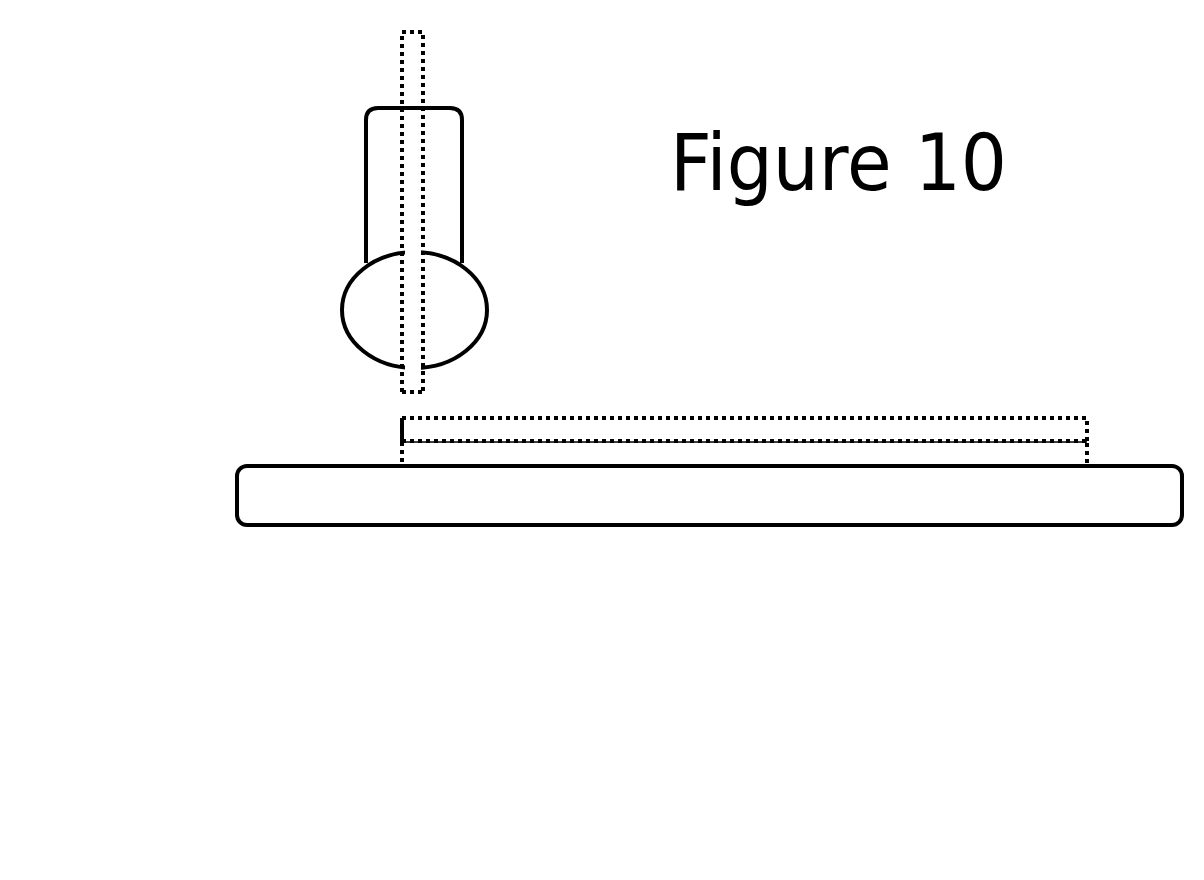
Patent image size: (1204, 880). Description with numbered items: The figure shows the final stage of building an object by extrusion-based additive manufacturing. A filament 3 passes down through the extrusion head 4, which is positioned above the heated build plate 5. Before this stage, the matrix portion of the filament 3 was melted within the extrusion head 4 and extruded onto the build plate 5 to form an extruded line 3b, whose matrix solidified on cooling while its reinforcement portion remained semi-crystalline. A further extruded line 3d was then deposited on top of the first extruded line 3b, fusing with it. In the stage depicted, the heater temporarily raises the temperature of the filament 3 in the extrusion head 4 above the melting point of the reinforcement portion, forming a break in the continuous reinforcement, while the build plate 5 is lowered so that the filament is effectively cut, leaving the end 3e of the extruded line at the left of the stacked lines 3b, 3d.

The filament 3 is at (423, 75).
The extruded line 3b is at (852, 458).
The further extruded line 3d is at (745, 432).
The end of the extruded line 3e is at (400, 430).
The extrusion head 4 is at (360, 287).
The heated build plate 5 is at (253, 490).